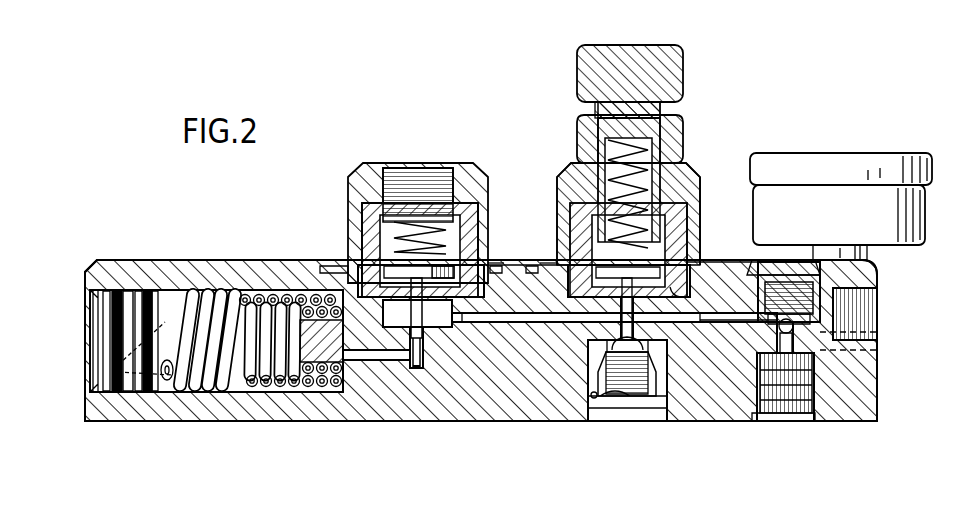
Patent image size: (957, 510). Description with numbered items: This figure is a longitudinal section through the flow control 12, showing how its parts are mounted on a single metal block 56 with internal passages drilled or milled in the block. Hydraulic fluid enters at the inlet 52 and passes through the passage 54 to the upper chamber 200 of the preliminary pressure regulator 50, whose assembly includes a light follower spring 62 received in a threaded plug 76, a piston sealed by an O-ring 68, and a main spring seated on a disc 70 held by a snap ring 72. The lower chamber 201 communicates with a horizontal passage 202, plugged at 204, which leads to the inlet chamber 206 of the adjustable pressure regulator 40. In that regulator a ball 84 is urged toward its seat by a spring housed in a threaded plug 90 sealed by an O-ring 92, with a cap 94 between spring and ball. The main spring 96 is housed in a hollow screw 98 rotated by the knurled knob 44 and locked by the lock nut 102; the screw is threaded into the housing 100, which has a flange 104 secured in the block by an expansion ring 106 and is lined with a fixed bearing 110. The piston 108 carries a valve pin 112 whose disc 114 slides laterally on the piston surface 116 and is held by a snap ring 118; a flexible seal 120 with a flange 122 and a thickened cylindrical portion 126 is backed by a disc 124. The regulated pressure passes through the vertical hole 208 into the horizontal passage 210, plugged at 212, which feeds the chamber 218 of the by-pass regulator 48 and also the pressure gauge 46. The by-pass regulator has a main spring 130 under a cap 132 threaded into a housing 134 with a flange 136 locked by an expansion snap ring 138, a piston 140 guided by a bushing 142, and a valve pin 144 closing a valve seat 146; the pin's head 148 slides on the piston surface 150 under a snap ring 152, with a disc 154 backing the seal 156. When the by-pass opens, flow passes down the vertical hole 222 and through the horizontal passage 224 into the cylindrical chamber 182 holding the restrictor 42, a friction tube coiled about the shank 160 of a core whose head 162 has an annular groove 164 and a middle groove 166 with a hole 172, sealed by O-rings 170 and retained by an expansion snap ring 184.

The flow control 12 is at (406, 439).
The adjustable pressure regulator 40 is at (704, 160).
The restrictor 42 is at (238, 281).
The knurled knob 44 is at (660, 48).
The pressure gauge 46 is at (880, 153).
The by-pass regulator 48 is at (501, 169).
The preliminary pressure regulator 50 is at (831, 428).
The inlet 52 is at (878, 302).
The passage 54 is at (868, 258).
The block 56 is at (514, 408).
The follower spring 62 is at (778, 276).
The O-ring 68 is at (755, 417).
The disc 70 is at (805, 432).
The snap ring 72 is at (786, 421).
The threaded plug 76 is at (798, 278).
The ball 84 is at (640, 354).
The threaded plug 90 is at (636, 421).
The O-ring 92 is at (590, 402).
The cap 94 is at (612, 352).
The main spring 96 is at (608, 160).
The hollow screw 98 is at (662, 137).
The housing 100 is at (694, 180).
The lock nut 102 is at (685, 118).
The flange 104 is at (687, 272).
The expansion ring 106 is at (530, 265).
The piston 108 is at (690, 227).
The fixed bearing 110 is at (700, 217).
The valve pin 112 is at (600, 335).
The disc 114 is at (548, 263).
The piston surface 116 is at (690, 247).
The snap ring 118 is at (614, 320).
The flexible seal 120 is at (696, 327).
The flange 122 is at (690, 294).
The disc 124 is at (700, 262).
The cylindrical portion 126 is at (568, 292).
The main spring 130 is at (362, 214).
The cap 132 is at (413, 168).
The housing 134 is at (386, 182).
The flange 136 is at (495, 265).
The expansion snap ring 138 is at (497, 263).
The piston 140 is at (481, 212).
The bushing 142 is at (362, 227).
The valve pin 144 is at (428, 347).
The valve seat 146 is at (425, 360).
The head 148 is at (352, 265).
The piston surface 150 is at (394, 238).
The snap ring 152 is at (358, 278).
The disc 154 is at (419, 262).
The seal 156 is at (383, 314).
The shank 160 is at (323, 341).
The head 162 is at (108, 318).
The annular groove 164 is at (128, 325).
The middle groove 166 is at (126, 290).
The O-rings 170 is at (116, 290).
The hole 172 is at (140, 357).
The cylindrical chamber 182 is at (260, 394).
The expansion snap ring 184 is at (92, 278).
The upper chamber 200 is at (792, 330).
The lower chamber 201 is at (833, 387).
The horizontal passage 202 is at (690, 360).
The plug 204 is at (878, 350).
The inlet chamber 206 is at (618, 332).
The vertical hole 208 is at (636, 327).
The horizontal passage 210 is at (498, 323).
The plug 212 is at (878, 320).
The chamber 218 is at (410, 352).
The vertical hole 222 is at (420, 375).
The horizontal passage 224 is at (328, 410).